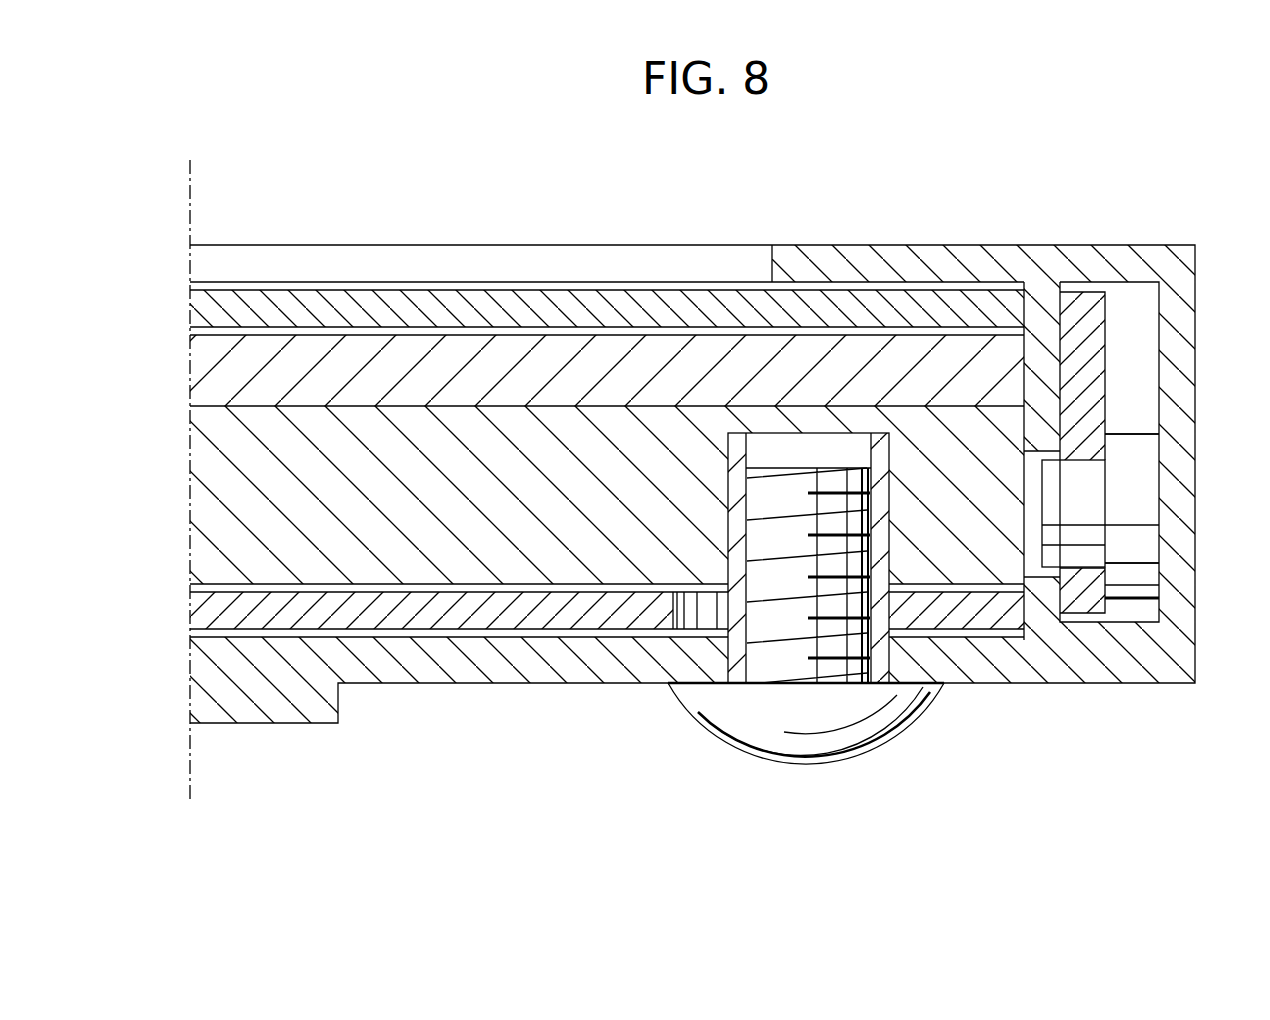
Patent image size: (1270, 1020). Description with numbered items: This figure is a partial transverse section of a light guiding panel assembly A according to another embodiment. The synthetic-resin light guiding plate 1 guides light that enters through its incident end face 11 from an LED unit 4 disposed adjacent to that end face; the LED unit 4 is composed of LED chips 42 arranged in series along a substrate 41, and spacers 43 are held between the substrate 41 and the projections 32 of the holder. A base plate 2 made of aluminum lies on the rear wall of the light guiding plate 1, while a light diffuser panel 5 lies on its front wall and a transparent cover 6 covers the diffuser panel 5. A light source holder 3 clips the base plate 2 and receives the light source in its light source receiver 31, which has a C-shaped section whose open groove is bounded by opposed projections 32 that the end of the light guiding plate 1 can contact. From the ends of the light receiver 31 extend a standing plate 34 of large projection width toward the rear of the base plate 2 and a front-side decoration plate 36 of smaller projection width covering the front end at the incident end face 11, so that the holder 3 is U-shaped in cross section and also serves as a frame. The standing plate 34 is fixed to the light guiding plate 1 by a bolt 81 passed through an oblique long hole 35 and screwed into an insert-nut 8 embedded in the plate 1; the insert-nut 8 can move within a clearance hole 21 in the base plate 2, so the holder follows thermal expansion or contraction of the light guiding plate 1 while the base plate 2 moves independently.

The light guiding plate 1 is at (930, 425).
The base plate 2 is at (597, 605).
The light source holder 3 is at (824, 740).
The standing plate 34 is at (912, 690).
The LED unit 4 is at (1156, 457).
The substrate 41 is at (1243, 420).
The LED chips 42 is at (1092, 480).
The spacers 43 is at (1086, 600).
The light diffuser panel 5 is at (676, 343).
The transparent cover 6 is at (625, 300).
The insert-nut 8 is at (733, 443).
The bolt 81 is at (788, 750).
The incident end face 11 is at (1042, 537).
The clearance hole 21 is at (683, 645).
The light source receiver 31 is at (1180, 578).
The projections 32 is at (1045, 367).
The long hole 35 is at (722, 660).
The decoration plate 36 is at (860, 250).
The light guiding panel assembly A is at (984, 182).